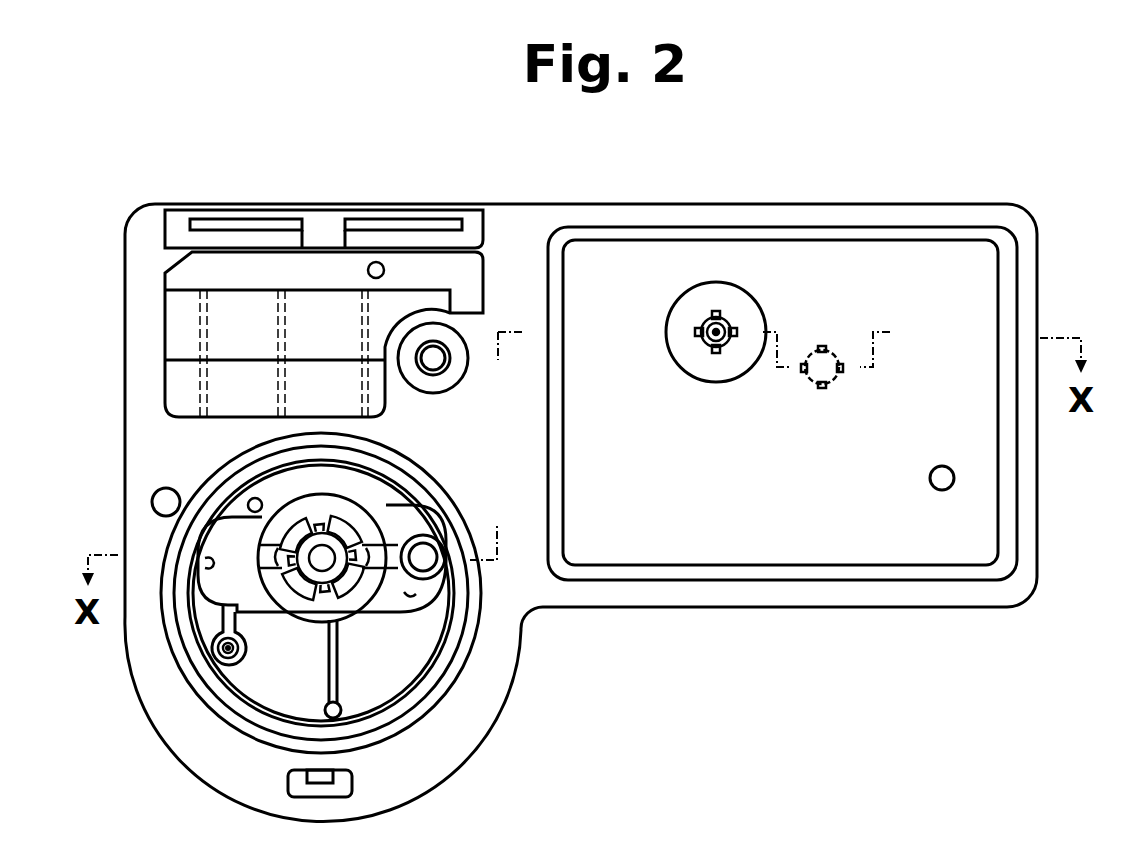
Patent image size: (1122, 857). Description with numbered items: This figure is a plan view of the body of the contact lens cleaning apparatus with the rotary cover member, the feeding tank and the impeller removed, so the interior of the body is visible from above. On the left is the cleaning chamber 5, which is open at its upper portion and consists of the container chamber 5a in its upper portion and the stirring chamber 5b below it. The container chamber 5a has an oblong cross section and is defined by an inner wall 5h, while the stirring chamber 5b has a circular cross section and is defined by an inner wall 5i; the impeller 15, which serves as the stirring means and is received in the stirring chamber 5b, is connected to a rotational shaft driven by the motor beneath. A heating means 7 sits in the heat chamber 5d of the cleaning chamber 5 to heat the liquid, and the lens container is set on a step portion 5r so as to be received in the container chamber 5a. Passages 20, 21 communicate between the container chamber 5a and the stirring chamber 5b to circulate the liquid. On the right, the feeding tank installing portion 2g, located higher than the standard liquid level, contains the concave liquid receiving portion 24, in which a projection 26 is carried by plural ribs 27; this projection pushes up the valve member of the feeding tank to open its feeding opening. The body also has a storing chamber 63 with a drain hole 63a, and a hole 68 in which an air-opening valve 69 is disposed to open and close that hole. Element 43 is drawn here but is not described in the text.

The feeding tank installing portion 2g is at (897, 262).
The liquid receiving portion 24 is at (747, 303).
The ribs 27 is at (703, 333).
The projection 26 is at (717, 348).
The slot panel 43 is at (210, 225).
The storing chamber 63 is at (307, 310).
The drain hole 63a is at (381, 265).
The hole 68 is at (438, 372).
The air-opening valve 69 is at (448, 350).
The cleaning chamber 5 is at (455, 590).
The heating means 7 is at (445, 567).
The step portion 5r is at (402, 522).
The heat chamber 5d is at (440, 555).
The passage 21 is at (283, 520).
The impeller 15 is at (250, 505).
The inner wall 5h is at (230, 590).
The container chamber 5a is at (223, 578).
The passage 20 is at (212, 657).
The stirring chamber 5b is at (228, 630).
The inner wall 5i is at (320, 623).